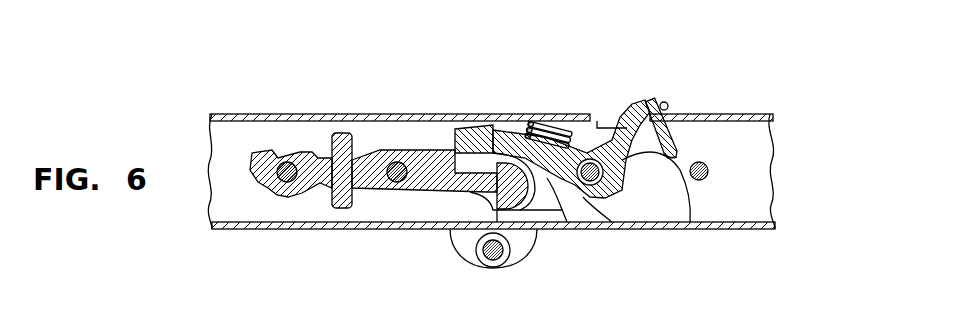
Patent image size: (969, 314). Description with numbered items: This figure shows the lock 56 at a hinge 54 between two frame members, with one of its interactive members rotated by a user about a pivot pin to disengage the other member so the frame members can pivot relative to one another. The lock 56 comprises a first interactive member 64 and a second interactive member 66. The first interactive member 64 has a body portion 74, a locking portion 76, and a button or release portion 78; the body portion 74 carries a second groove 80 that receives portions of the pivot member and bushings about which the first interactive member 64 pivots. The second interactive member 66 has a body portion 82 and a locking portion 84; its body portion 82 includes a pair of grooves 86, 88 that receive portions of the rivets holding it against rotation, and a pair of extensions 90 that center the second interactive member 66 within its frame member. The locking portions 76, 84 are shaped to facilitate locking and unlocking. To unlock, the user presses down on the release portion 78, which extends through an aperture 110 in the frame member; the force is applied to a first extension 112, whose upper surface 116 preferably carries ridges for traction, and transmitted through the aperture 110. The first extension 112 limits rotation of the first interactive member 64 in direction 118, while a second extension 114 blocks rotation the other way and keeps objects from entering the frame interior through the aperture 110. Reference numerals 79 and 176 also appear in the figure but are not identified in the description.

The hinge 54 is at (542, 266).
The lock 56 is at (590, 112).
The first interactive member 64 is at (629, 192).
The second interactive member 66 is at (320, 150).
The body portion 74 is at (561, 202).
The locking portion 76 is at (469, 127).
The release portion 78 is at (692, 106).
The spring 79 is at (532, 126).
The second groove 80 is at (584, 198).
The body portion 82 is at (366, 154).
The locking portion 84 is at (457, 204).
The groove 86 is at (283, 151).
The groove 88 is at (397, 184).
The extension 90 is at (343, 130).
The aperture 110 is at (603, 111).
The first extension 112 is at (681, 121).
The second extension 114 is at (698, 184).
The upper surface 116 is at (664, 102).
The direction 118 is at (588, 40).
The housing 176 is at (740, 143).